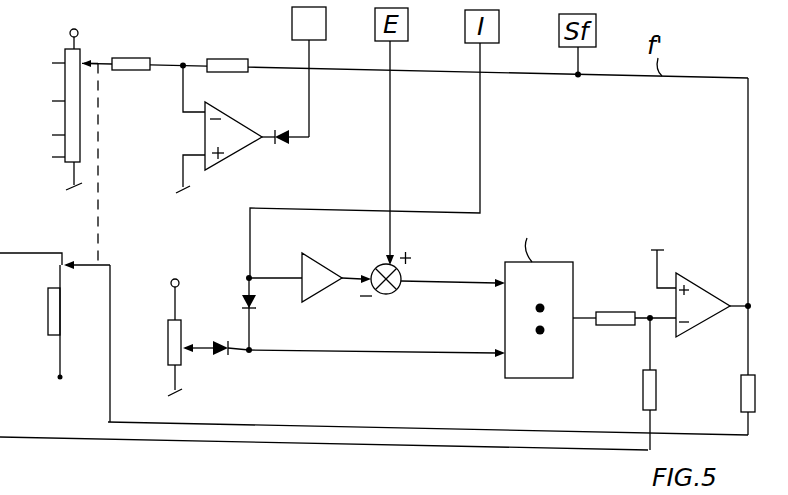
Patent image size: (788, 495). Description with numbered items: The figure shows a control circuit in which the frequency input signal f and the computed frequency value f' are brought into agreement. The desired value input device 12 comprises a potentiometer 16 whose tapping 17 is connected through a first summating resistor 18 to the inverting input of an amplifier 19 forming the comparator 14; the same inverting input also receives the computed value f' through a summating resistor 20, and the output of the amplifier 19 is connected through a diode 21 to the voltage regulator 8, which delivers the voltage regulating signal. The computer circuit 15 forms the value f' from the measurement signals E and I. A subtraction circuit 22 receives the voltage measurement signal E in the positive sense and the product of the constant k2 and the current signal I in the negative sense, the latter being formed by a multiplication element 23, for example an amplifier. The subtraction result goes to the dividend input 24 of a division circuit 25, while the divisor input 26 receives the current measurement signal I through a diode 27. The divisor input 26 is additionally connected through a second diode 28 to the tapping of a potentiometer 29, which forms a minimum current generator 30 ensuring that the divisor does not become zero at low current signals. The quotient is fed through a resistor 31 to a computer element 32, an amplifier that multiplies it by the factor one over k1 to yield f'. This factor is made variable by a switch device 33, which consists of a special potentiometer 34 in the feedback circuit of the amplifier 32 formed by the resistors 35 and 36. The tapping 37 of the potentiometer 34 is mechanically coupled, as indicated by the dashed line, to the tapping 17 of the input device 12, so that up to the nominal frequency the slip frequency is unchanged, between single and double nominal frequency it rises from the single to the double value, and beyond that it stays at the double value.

The voltage regulator 8 is at (291, 26).
The desired value input device 12 is at (54, 173).
The comparator 14 is at (204, 131).
The computer circuit 15 is at (566, 305).
The potentiometer 16 is at (77, 118).
The tapping 17 is at (100, 60).
The first summating resistor 18 is at (140, 57).
The amplifier 19 is at (243, 128).
The summating resistor 20 is at (222, 58).
The diode 21 is at (282, 148).
The subtraction circuit 22 is at (381, 267).
The multiplication element 23 is at (318, 297).
The dividend input 24 is at (447, 280).
The division circuit 25 is at (537, 380).
The divisor input 26 is at (460, 356).
The diode 27 is at (243, 292).
The second diode 28 is at (226, 358).
The potentiometer 29 is at (166, 335).
The minimum current generator 30 is at (255, 360).
The resistor 31 is at (618, 327).
The computer element 32 is at (697, 283).
The switch device 33 is at (75, 390).
The special potentiometer 34 is at (72, 310).
The resistor 35 is at (656, 386).
The resistor 36 is at (735, 393).
The tapping 37 is at (104, 262).